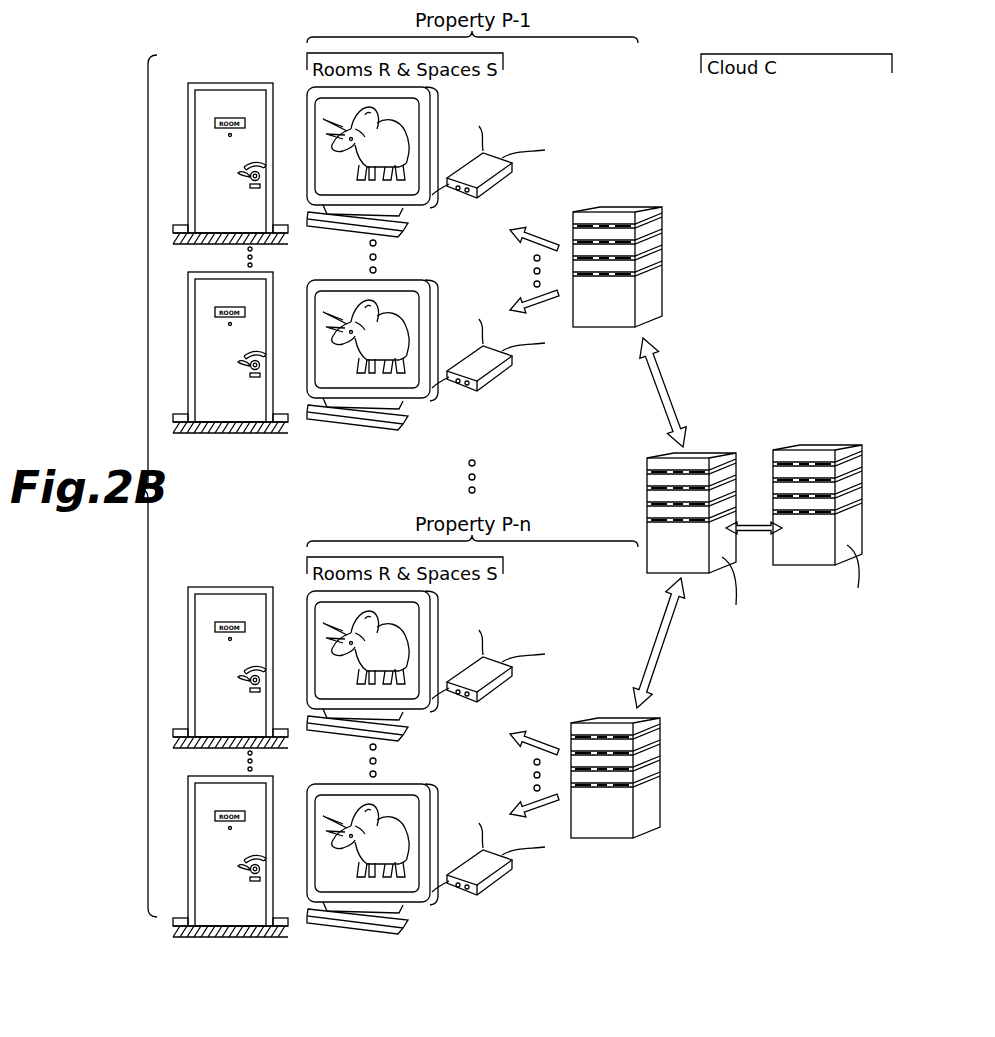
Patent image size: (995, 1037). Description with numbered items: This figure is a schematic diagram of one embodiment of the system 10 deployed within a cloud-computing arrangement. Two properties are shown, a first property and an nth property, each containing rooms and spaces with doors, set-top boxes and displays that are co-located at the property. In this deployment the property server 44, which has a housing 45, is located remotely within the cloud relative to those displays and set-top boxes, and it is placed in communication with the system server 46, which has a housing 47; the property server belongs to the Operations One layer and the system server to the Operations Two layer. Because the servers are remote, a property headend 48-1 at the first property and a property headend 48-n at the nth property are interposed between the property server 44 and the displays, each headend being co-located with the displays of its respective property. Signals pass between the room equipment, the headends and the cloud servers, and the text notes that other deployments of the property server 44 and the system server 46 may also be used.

The system 10 is at (140, 101).
The property headend 48-1 is at (639, 209).
The property headend 48-n is at (648, 829).
The property server 44 is at (717, 452).
The housing 45 is at (735, 594).
The system server 46 is at (841, 444).
The housing 47 is at (859, 577).